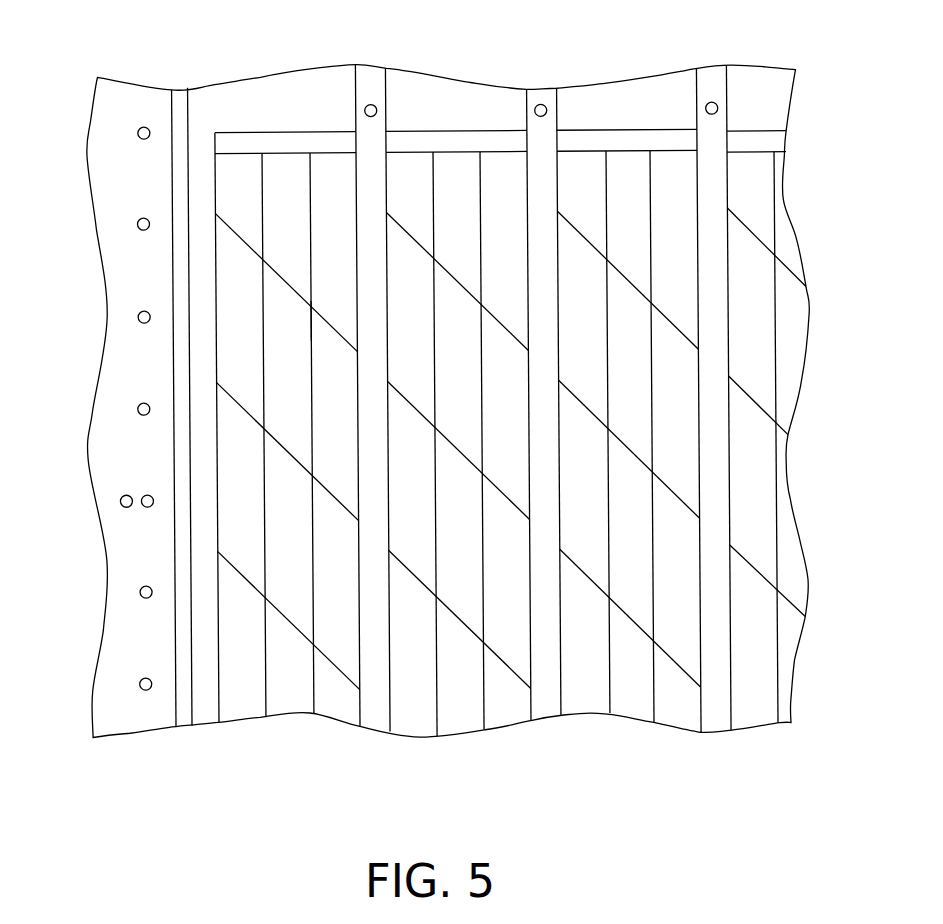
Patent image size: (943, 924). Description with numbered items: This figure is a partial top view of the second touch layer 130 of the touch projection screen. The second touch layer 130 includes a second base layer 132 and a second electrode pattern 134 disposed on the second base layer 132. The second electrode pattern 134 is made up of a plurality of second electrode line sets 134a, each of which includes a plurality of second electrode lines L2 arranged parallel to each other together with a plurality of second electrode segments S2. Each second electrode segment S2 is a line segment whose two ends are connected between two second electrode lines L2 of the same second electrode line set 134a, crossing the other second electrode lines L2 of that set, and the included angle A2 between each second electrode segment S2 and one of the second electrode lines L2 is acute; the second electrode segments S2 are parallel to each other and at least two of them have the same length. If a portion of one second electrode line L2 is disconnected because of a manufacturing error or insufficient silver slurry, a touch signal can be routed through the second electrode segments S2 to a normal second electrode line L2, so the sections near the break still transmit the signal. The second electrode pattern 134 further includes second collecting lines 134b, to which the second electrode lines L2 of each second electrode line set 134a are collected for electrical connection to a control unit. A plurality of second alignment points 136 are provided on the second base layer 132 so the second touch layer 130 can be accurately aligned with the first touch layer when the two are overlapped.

The second touch layer 130 is at (851, 774).
The second base layer 132 is at (137, 105).
The second electrode pattern 134 is at (412, 373).
The second electrode line set 134a is at (356, 58).
The second collecting line 134b is at (357, 89).
The second alignment point 136 is at (136, 407).
The second electrode line L2 is at (215, 170).
The second electrode segment S2 is at (246, 244).
The included angle A2 is at (358, 308).